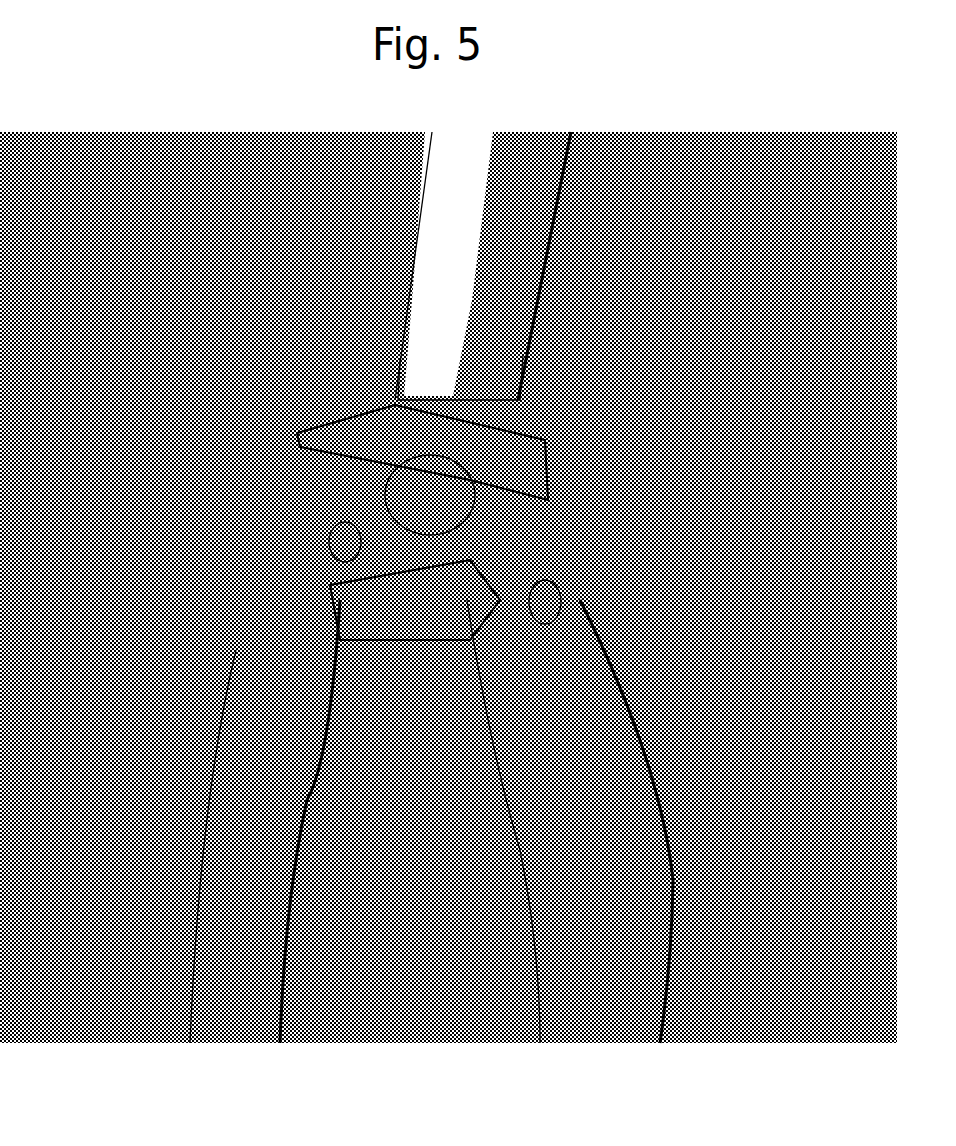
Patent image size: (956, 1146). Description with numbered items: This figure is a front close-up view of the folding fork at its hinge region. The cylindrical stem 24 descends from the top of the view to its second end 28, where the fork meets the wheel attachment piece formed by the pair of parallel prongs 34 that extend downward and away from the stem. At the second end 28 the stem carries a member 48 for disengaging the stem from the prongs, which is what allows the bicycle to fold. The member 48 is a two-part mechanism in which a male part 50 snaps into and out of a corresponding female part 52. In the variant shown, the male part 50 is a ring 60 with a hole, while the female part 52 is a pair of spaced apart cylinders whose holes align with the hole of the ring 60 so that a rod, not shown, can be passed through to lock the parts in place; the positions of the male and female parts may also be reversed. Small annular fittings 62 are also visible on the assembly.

The stem 24 is at (478, 262).
The second end of the stem 28 is at (463, 380).
The member for disengaging the stem 48 is at (422, 522).
The female part 52 is at (322, 424).
The ring 60 is at (390, 497).
The mounting ring 62 is at (330, 550).
The male part 50 is at (340, 600).
The prongs 34 is at (235, 862).